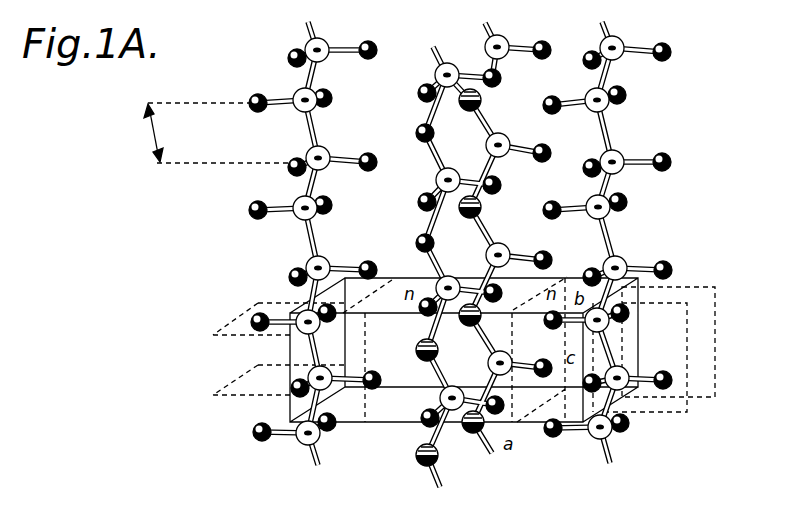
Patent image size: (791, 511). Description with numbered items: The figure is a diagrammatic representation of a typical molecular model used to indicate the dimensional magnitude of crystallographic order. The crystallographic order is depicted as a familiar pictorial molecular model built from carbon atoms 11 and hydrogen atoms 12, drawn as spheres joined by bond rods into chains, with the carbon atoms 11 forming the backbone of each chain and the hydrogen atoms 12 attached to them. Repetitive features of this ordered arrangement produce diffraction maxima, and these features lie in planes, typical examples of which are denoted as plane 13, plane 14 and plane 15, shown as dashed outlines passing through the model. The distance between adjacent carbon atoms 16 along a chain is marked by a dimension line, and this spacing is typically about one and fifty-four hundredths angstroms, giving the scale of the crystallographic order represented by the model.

The carbon atoms 11 is at (307, 153).
The hydrogen atoms 12 is at (290, 274).
The plane 13 is at (213, 392).
The plane 14 is at (378, 424).
The plane 15 is at (715, 397).
The distance between adjacent carbon atoms 16 is at (150, 133).